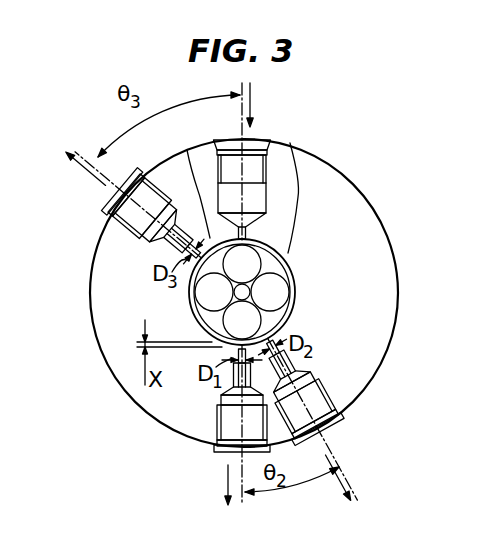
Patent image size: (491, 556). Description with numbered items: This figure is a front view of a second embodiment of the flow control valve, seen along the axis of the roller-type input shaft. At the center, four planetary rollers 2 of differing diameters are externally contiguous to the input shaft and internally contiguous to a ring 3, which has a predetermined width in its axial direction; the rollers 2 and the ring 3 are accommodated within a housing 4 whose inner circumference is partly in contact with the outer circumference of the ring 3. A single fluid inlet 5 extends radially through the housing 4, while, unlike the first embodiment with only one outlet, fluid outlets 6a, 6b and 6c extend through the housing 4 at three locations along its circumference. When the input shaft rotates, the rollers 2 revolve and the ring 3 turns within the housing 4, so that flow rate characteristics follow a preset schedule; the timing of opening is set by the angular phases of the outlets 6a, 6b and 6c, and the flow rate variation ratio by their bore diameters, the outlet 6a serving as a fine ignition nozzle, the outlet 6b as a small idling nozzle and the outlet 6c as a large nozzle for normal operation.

The planetary rollers 2 is at (286, 253).
The ring 3 is at (289, 284).
The housing 4 is at (110, 377).
The fluid inlet 5 is at (254, 139).
The fluid outlet 6a is at (223, 452).
The fluid outlet 6b is at (338, 422).
The fluid outlet 6c is at (113, 205).